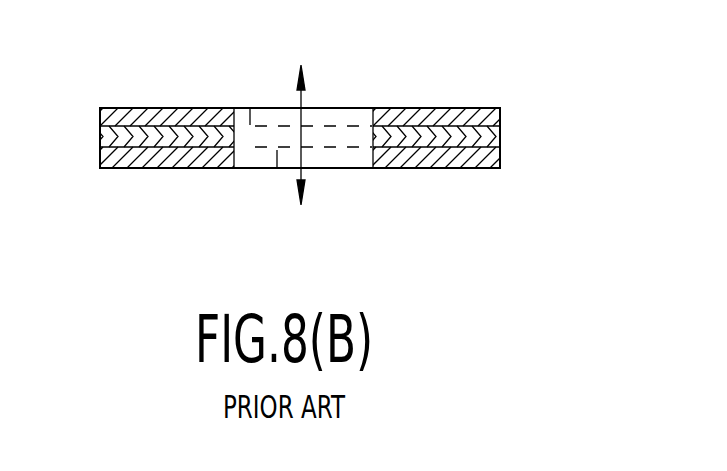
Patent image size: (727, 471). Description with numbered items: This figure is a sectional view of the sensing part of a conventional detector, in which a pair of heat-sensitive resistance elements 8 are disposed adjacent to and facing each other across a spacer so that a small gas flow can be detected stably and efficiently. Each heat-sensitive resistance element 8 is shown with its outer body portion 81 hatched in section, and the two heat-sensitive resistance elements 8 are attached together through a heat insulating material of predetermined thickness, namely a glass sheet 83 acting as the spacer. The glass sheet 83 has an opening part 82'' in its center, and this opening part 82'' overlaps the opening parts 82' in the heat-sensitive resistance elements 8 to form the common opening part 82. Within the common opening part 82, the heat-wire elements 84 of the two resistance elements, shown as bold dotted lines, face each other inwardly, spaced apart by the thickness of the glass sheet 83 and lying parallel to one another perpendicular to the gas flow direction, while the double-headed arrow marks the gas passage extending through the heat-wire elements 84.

The heat-sensitive resistance element 8 is at (497, 108).
The outer layers / substrates of the cell 81 is at (452, 114).
The common opening part 82 is at (263, 102).
The opening part 82' is at (314, 139).
The opening part 82'' is at (313, 199).
The glass sheet 83 is at (490, 138).
The heat-wire element 84 is at (249, 106).